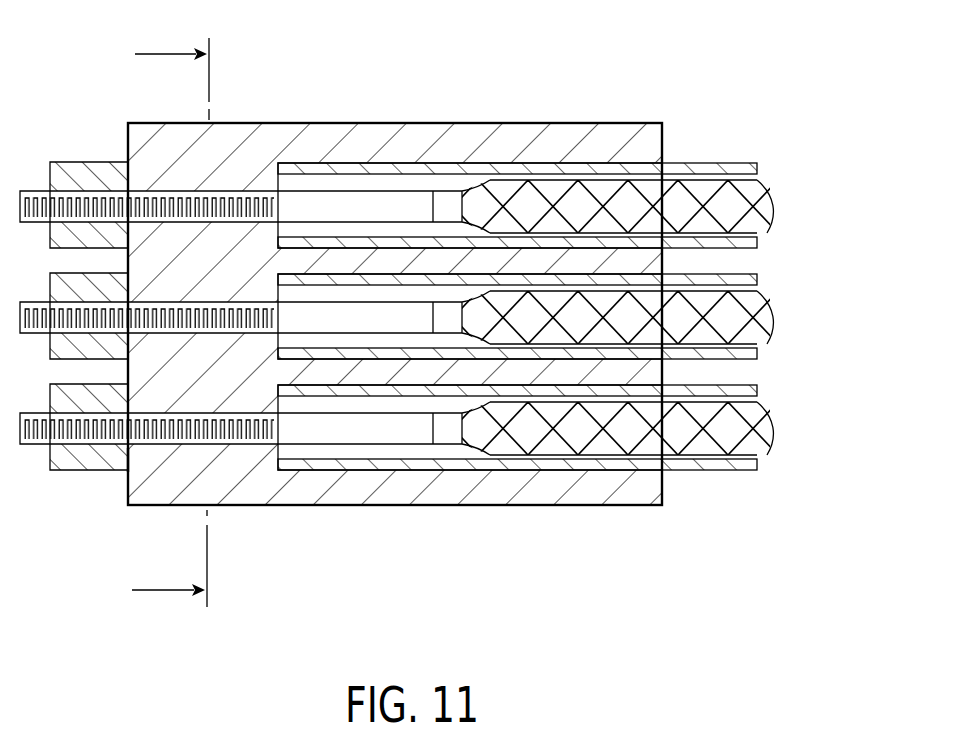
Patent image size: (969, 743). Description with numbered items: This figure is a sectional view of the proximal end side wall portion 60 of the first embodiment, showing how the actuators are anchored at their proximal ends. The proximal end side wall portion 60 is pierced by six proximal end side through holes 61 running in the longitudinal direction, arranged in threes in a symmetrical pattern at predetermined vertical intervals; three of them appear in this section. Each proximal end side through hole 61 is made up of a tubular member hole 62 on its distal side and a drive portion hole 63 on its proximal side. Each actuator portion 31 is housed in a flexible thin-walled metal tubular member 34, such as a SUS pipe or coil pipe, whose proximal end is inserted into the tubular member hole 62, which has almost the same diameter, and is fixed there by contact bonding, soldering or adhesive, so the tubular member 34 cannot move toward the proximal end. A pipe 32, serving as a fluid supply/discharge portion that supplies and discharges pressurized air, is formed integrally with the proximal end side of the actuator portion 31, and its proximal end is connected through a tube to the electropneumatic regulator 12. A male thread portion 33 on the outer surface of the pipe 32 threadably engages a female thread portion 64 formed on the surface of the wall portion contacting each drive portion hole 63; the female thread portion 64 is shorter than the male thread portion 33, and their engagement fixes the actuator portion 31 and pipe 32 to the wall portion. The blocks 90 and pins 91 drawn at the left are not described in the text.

The electropneumatic regulator 12 is at (169, 323).
The actuator portion 31 is at (730, 190).
The pipe 32 is at (395, 203).
The male thread portion 33 is at (127, 473).
The tubular member 34 is at (588, 170).
The proximal end side wall portion 60 is at (268, 140).
The proximal end side through hole 61 is at (274, 585).
The tubular member hole 62 is at (448, 472).
The drive portion hole 63 is at (241, 448).
The female thread portion 64 is at (182, 445).
The terminal block 90 is at (75, 170).
The terminal pin 91 is at (73, 455).